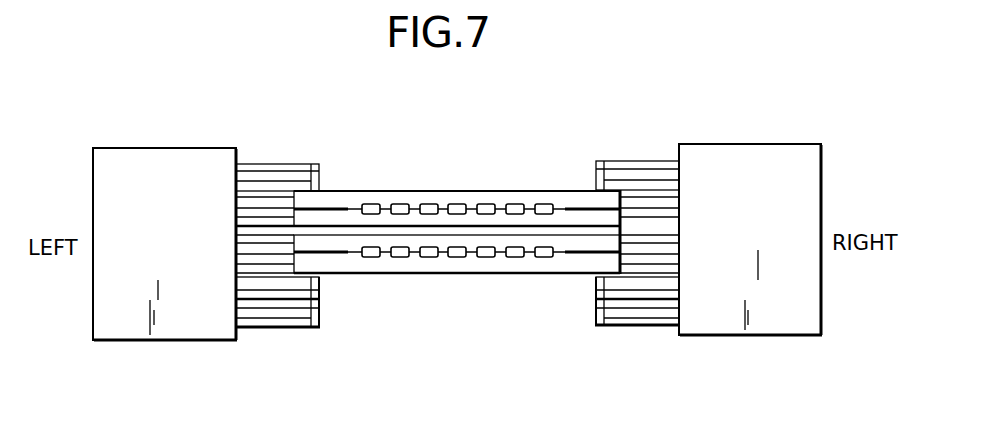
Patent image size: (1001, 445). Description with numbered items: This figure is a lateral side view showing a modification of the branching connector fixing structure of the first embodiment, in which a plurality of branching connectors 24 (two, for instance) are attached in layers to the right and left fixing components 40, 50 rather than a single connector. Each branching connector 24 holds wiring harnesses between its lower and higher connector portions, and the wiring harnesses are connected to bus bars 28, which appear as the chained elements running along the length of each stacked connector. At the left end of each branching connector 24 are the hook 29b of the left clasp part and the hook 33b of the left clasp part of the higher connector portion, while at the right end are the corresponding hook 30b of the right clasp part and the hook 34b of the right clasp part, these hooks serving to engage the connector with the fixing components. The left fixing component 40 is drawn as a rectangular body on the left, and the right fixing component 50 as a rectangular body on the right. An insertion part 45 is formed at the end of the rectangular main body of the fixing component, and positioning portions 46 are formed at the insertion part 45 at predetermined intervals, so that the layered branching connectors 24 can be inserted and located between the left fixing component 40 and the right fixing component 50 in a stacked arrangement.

The branching connector 24 is at (418, 190).
The bus bars 28 is at (487, 204).
The hook 29b is at (307, 198).
The hook 30b is at (603, 197).
The hook 33b is at (308, 222).
The hook 34b is at (610, 218).
The left fixing component 40 is at (190, 138).
The insertion part 45 is at (312, 309).
The positioning portions 46 is at (258, 283).
The right fixing component 50 is at (766, 135).